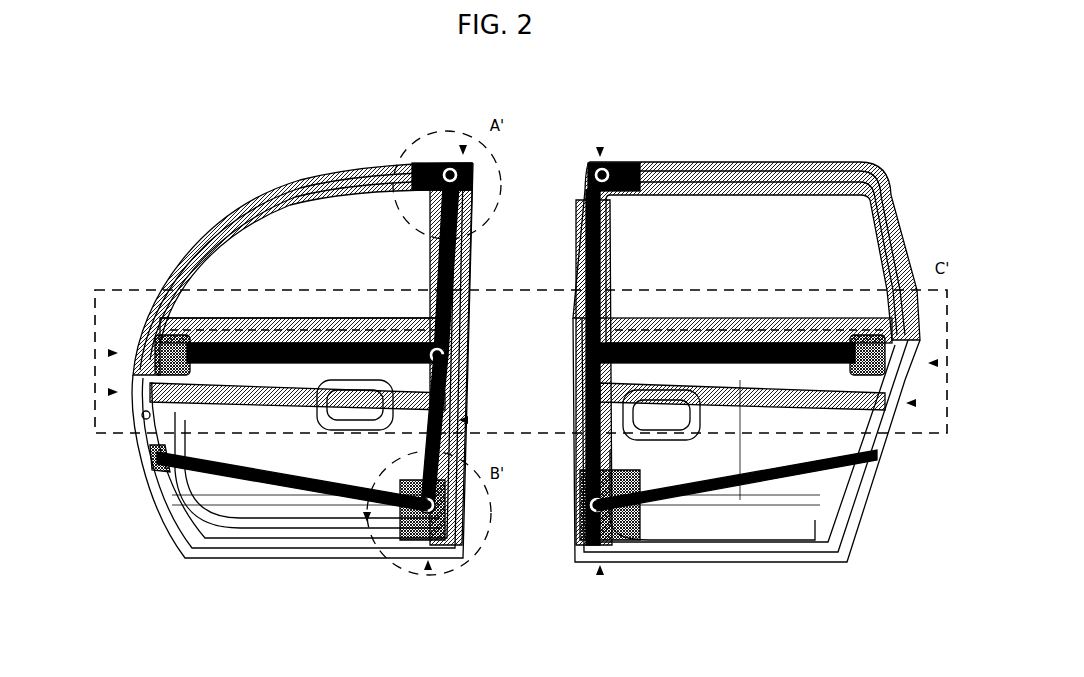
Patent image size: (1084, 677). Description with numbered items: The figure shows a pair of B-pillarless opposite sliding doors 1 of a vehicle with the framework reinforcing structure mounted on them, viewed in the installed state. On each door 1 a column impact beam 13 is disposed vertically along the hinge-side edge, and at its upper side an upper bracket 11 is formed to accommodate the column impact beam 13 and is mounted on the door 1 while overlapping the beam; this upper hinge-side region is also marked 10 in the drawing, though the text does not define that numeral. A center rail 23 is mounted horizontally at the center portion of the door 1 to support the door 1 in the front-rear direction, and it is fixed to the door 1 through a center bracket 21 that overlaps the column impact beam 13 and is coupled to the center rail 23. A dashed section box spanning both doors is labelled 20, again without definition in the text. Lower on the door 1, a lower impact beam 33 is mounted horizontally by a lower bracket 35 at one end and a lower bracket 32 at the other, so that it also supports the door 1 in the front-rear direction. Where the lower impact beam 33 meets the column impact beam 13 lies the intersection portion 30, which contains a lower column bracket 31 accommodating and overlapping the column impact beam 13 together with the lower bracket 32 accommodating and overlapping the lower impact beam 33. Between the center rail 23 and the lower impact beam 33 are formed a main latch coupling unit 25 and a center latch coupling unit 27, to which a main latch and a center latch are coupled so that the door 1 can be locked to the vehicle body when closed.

The door 1 is at (276, 192).
The upper hinge portion 10 is at (434, 130).
The upper bracket 11 is at (470, 176).
The column impact beam 13 is at (455, 266).
The belt line portion 20 is at (912, 440).
The center bracket 21 is at (455, 318).
The center rail 23 is at (232, 366).
The main latch coupling unit 25 is at (145, 413).
The center latch coupling unit 27 is at (453, 398).
The intersection portion 30 is at (478, 578).
The lower column bracket 31 is at (393, 530).
The lower bracket 32 is at (427, 525).
The lower impact beam 33 is at (246, 482).
The lower bracket 35 is at (168, 470).